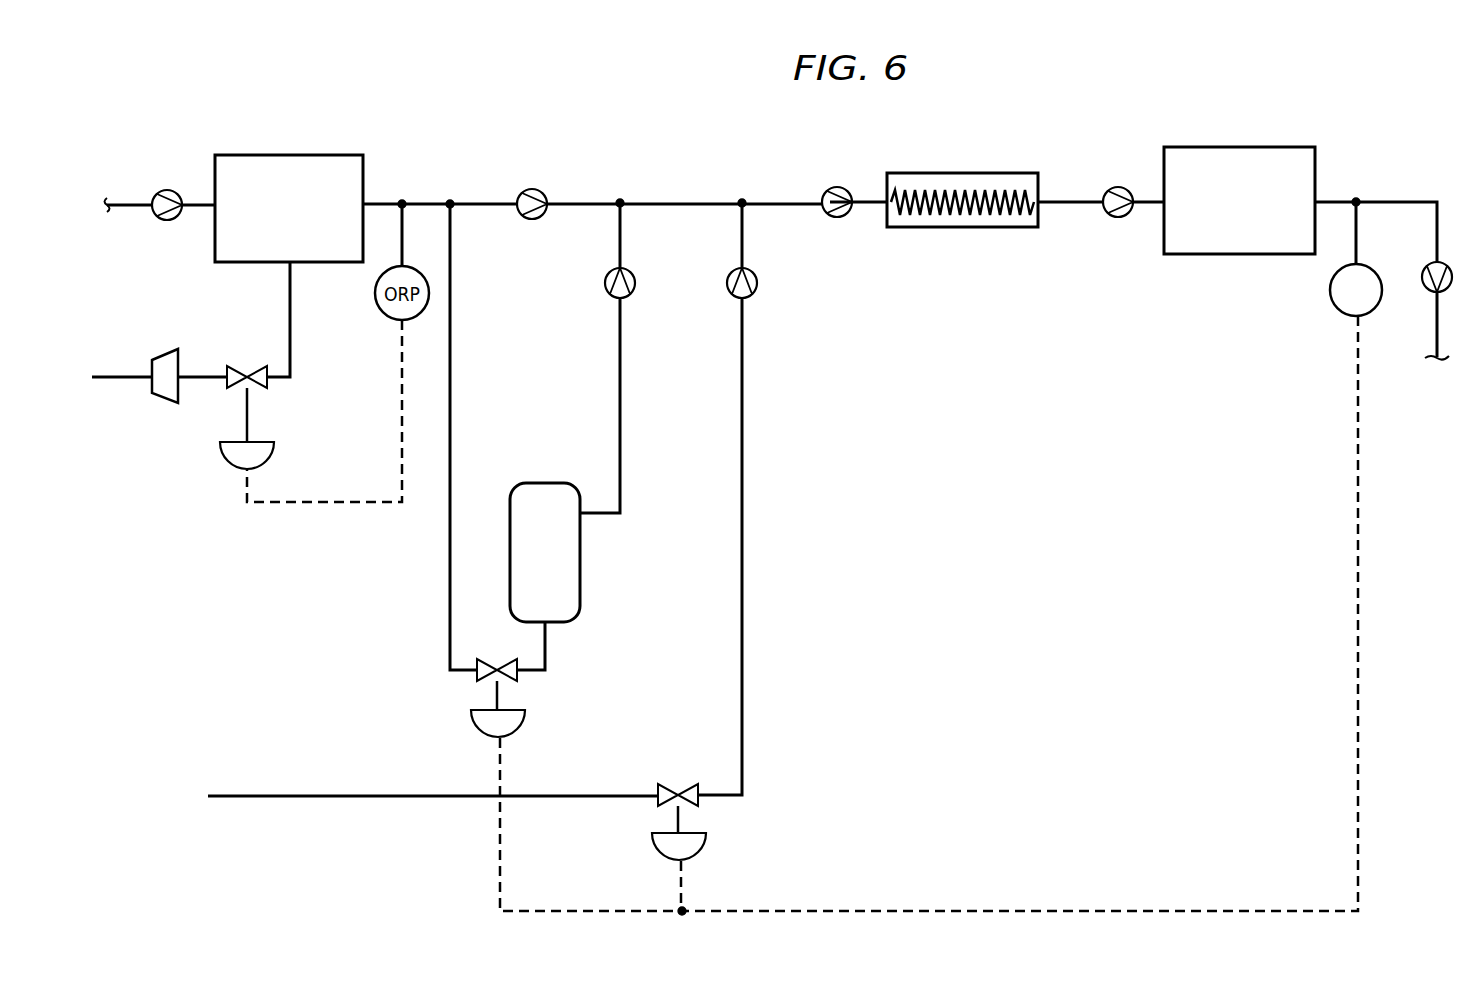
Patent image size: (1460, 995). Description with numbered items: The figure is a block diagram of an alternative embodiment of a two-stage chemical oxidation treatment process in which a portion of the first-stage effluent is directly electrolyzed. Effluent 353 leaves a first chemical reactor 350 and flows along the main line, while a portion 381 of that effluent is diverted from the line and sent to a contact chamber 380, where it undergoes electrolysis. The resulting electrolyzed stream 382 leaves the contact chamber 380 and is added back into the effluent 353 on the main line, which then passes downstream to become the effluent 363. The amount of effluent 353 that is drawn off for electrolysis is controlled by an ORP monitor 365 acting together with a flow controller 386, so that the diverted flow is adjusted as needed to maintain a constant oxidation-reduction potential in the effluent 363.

The first chemical reactor 350 is at (284, 135).
The effluent 353 is at (426, 200).
The effluent 363 is at (1390, 199).
The ORP monitor 365 is at (1328, 298).
The contact chamber 380 is at (588, 574).
The portion of the effluent 381 is at (449, 597).
The electrolyzed stream 382 is at (624, 250).
The flow controller 386 is at (471, 718).